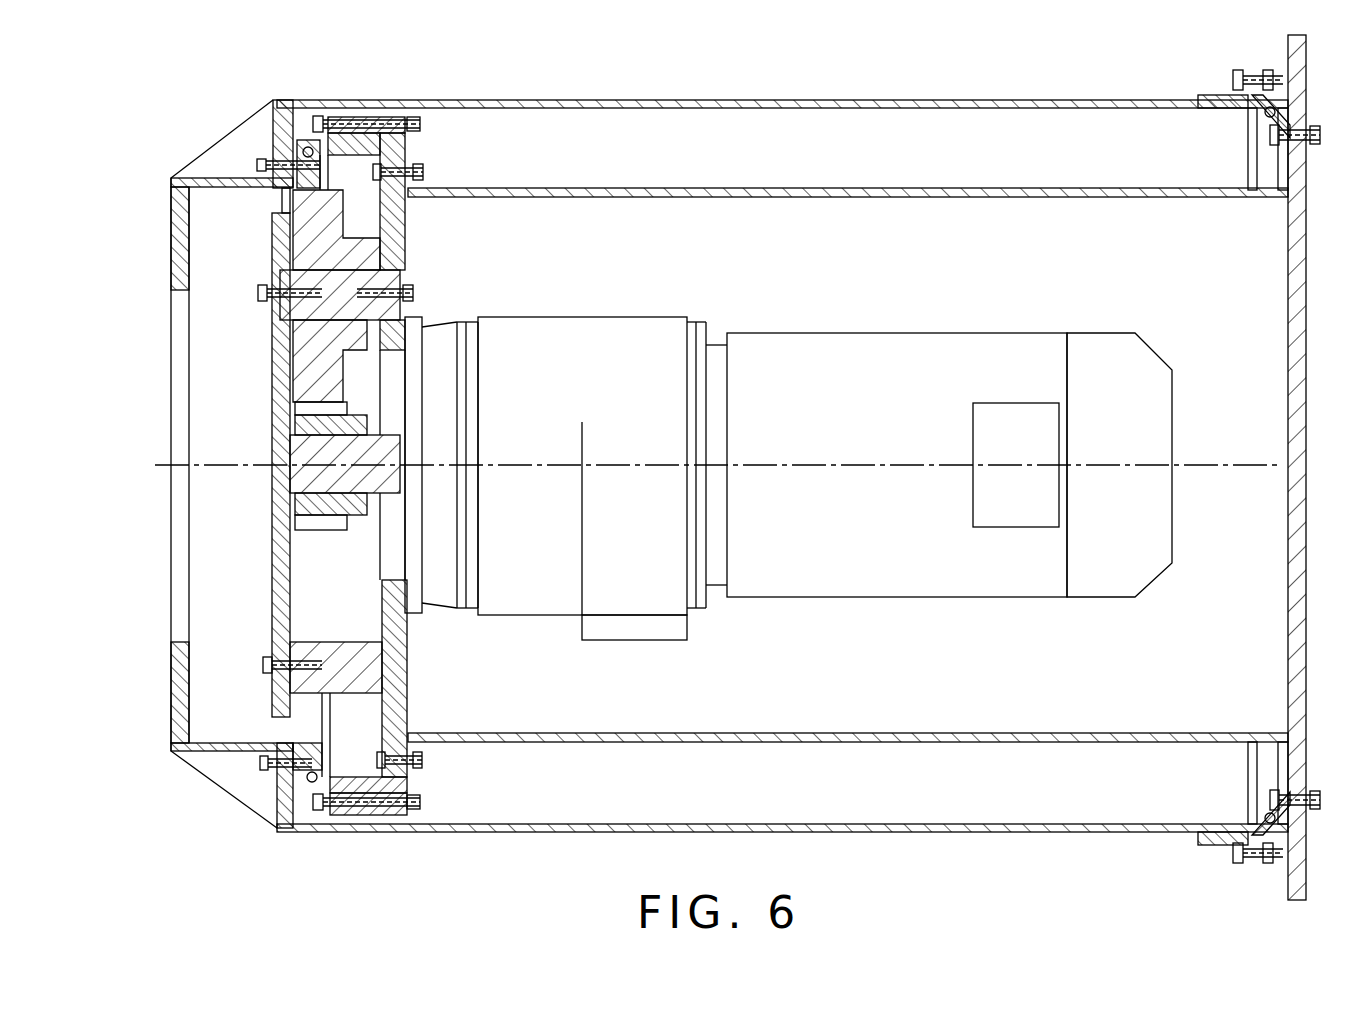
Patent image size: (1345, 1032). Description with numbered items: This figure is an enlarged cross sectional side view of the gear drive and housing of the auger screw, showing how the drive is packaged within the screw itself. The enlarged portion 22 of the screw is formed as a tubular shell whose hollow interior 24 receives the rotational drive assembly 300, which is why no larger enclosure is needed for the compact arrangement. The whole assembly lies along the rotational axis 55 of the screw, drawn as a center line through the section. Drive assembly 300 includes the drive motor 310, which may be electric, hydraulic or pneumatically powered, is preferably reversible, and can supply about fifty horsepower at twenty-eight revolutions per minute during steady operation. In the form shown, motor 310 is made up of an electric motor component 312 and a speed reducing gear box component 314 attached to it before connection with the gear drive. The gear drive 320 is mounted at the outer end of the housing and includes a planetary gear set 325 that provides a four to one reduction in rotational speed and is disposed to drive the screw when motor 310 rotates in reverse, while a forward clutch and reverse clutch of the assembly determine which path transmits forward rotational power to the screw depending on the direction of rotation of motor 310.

The rotational drive assembly 300 is at (300, 868).
The gear drive 320 is at (333, 97).
The planetary gear set 325 is at (320, 228).
The speed reducing gear box component 314 is at (599, 377).
The drive motor 310 is at (829, 368).
The electric motor component 312 is at (996, 391).
The rotational axis 55 is at (905, 466).
The hollow interior 24 is at (523, 780).
The enlarged portion 22 is at (727, 832).